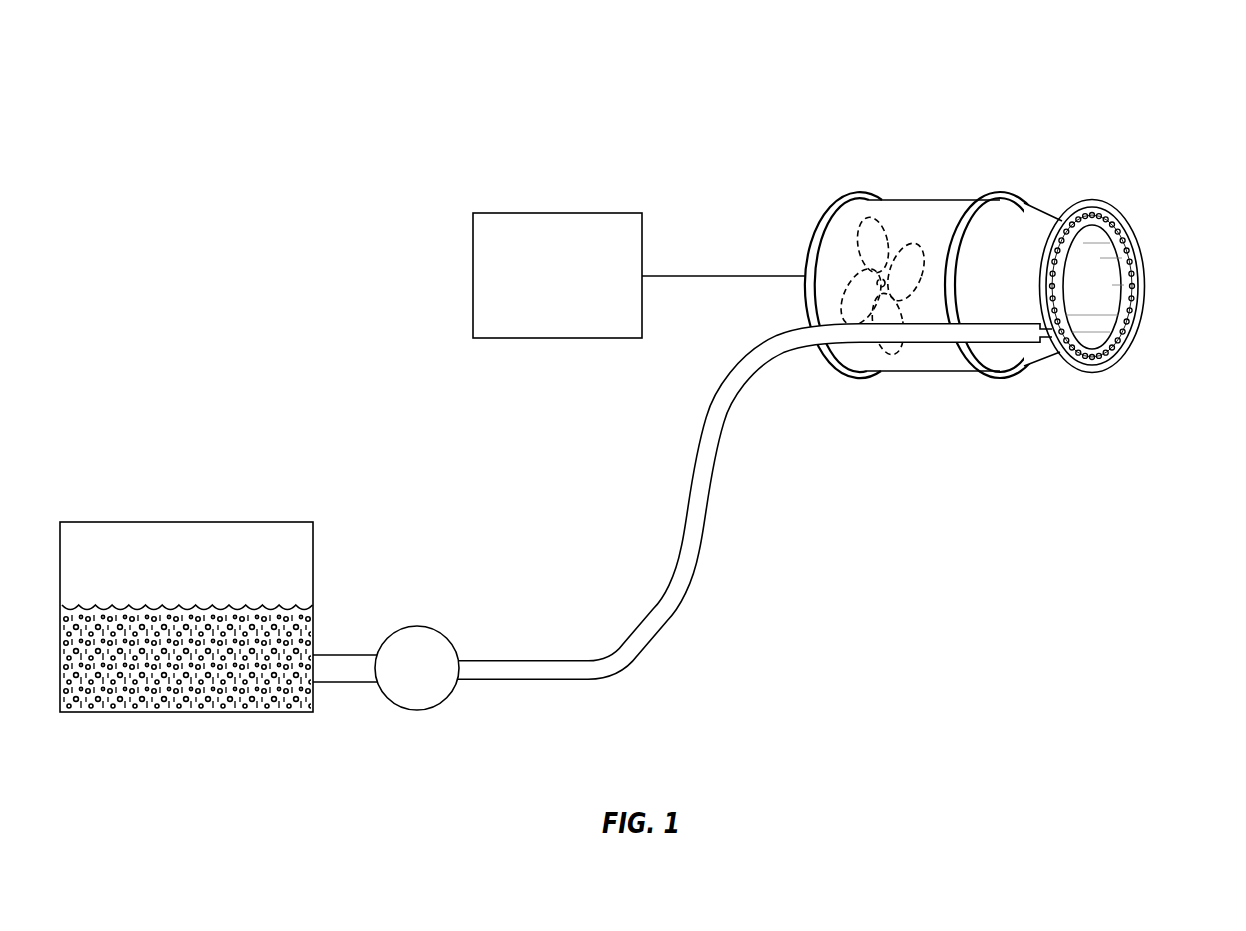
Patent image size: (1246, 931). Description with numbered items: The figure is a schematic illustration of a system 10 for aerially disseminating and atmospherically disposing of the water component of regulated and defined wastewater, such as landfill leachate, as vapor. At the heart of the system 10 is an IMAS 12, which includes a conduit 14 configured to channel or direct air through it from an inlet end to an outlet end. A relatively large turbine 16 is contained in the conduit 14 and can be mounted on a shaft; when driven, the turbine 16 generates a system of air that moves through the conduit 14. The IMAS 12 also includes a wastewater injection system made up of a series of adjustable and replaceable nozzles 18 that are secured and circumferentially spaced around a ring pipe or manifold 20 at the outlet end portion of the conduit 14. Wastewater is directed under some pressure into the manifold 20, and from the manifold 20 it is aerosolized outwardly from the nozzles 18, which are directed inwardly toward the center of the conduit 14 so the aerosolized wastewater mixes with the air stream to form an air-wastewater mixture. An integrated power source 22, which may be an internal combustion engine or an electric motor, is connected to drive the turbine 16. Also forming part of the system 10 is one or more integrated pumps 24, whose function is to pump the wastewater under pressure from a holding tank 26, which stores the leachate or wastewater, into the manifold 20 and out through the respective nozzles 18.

The system 10 is at (713, 100).
The IMAS 12 is at (955, 142).
The conduit 14 is at (869, 212).
The turbine 16 is at (891, 255).
The nozzles 18 is at (1122, 227).
The manifold 20 is at (1138, 287).
The power source 22 is at (642, 237).
The pump 24 is at (432, 708).
The holding tank 26 is at (313, 563).